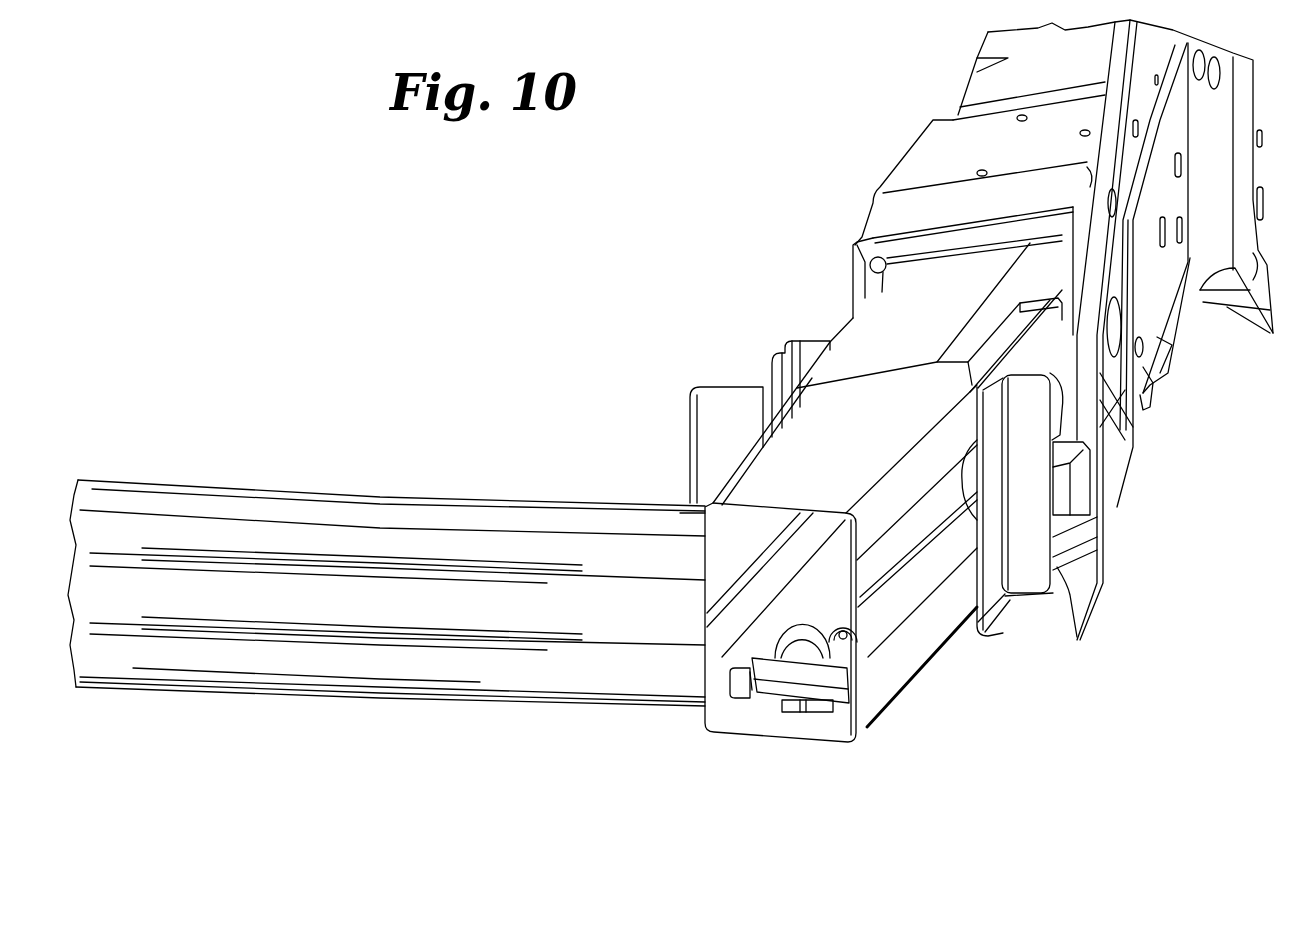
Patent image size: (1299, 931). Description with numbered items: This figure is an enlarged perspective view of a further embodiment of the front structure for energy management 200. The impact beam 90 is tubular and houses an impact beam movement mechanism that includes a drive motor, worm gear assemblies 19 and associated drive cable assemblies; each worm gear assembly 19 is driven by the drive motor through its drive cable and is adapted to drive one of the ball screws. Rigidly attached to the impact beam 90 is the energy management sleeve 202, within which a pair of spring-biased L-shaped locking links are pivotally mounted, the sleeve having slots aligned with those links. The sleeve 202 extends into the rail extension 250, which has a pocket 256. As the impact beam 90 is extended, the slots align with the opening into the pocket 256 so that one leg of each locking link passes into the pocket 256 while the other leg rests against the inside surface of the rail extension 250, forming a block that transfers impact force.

The front structure for energy management 200 is at (204, 299).
The impact beam 90 is at (340, 673).
The energy management sleeve 202 is at (910, 658).
The worm gear assembly 19 is at (790, 676).
The rail extension 250 is at (867, 340).
The pocket 256 is at (1080, 480).